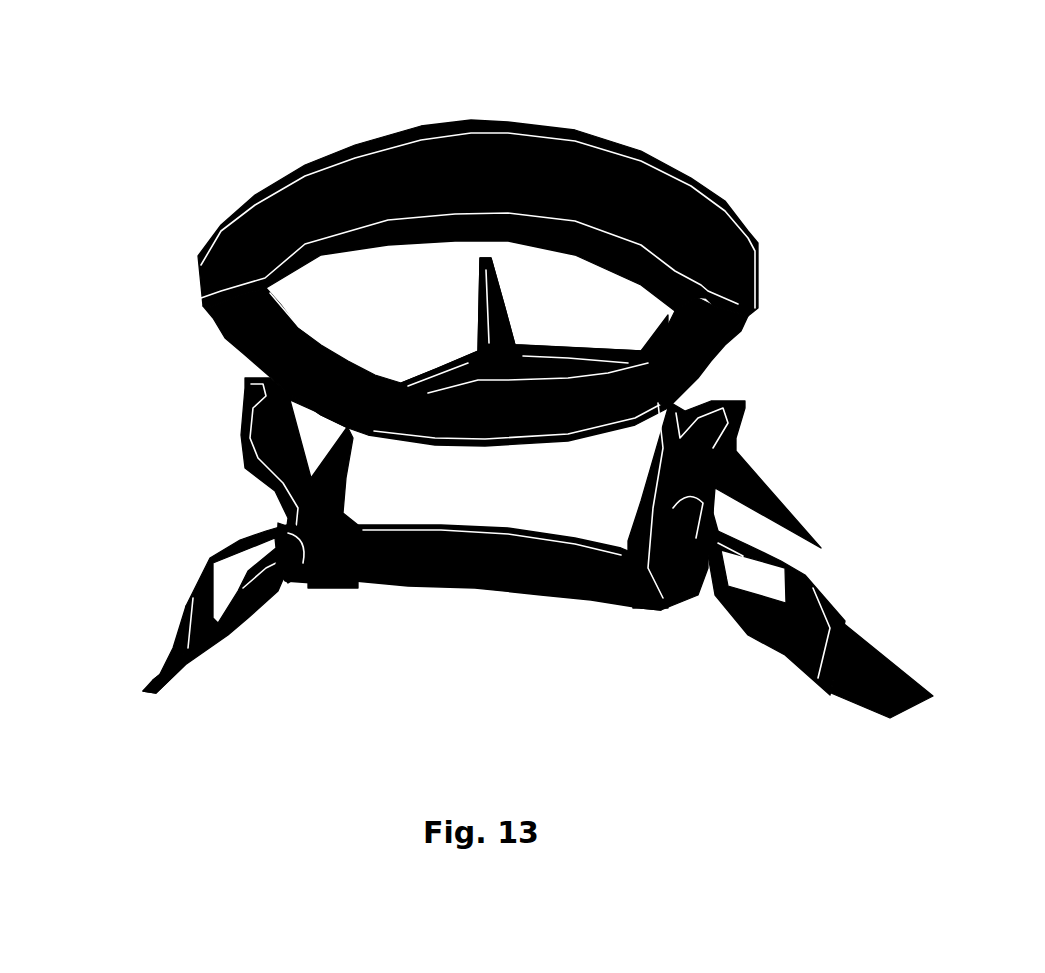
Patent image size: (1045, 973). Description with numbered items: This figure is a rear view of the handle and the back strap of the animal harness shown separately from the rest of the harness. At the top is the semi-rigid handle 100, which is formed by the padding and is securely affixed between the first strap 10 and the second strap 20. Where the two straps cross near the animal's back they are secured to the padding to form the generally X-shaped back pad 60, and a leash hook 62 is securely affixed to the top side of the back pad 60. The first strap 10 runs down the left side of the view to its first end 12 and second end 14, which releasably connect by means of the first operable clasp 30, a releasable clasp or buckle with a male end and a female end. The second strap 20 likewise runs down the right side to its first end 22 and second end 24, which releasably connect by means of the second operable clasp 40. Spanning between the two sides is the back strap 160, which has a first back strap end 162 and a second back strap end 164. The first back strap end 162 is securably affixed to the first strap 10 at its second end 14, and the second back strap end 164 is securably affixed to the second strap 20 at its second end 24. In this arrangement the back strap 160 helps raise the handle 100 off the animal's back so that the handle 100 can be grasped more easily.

The handle 100 is at (506, 100).
The leash hook 62 is at (470, 281).
The back pad 60 is at (532, 348).
The first strap 10 is at (237, 427).
The first end 12 is at (185, 586).
The second end 14 is at (270, 513).
The first operable clasp 30 is at (221, 598).
The back strap 160 is at (472, 578).
The first back strap end 162 is at (318, 577).
The second back strap end 164 is at (636, 600).
The second strap 20 is at (718, 445).
The first end 22 is at (800, 672).
The second end 24 is at (708, 510).
The second operable clasp 40 is at (751, 601).